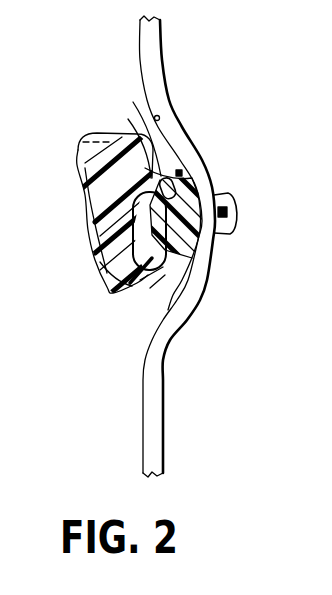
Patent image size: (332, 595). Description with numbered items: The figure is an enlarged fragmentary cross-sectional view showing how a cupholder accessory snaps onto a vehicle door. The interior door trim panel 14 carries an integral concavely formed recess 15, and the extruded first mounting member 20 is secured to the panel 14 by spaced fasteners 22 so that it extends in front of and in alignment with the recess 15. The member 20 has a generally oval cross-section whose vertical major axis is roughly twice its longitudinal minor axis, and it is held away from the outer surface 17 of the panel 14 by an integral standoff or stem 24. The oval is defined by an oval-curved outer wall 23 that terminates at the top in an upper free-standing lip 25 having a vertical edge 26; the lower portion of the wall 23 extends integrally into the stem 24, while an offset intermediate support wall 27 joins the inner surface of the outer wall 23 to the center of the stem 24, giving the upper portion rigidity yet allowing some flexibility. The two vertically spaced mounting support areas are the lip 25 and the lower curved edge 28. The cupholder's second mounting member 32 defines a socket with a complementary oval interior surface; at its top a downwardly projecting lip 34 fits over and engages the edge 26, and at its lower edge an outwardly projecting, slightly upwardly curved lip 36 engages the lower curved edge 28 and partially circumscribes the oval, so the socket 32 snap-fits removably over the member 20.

The interior door trim panel 14 is at (166, 65).
The recess 15 is at (196, 180).
The outer surface 17 is at (160, 117).
The first mounting member 20 is at (212, 184).
The fasteners 22 is at (234, 233).
The outer wall 23 is at (80, 160).
The stem 24 is at (200, 285).
The upper free-standing lip 25 is at (193, 176).
The vertical edge 26 is at (133, 187).
The intermediate support wall 27 is at (250, 265).
The lower curved edge 28 is at (118, 296).
The second mounting member 32 is at (90, 243).
The downwardly projecting lip 34 is at (131, 127).
The outwardly projecting lip 36 is at (154, 300).